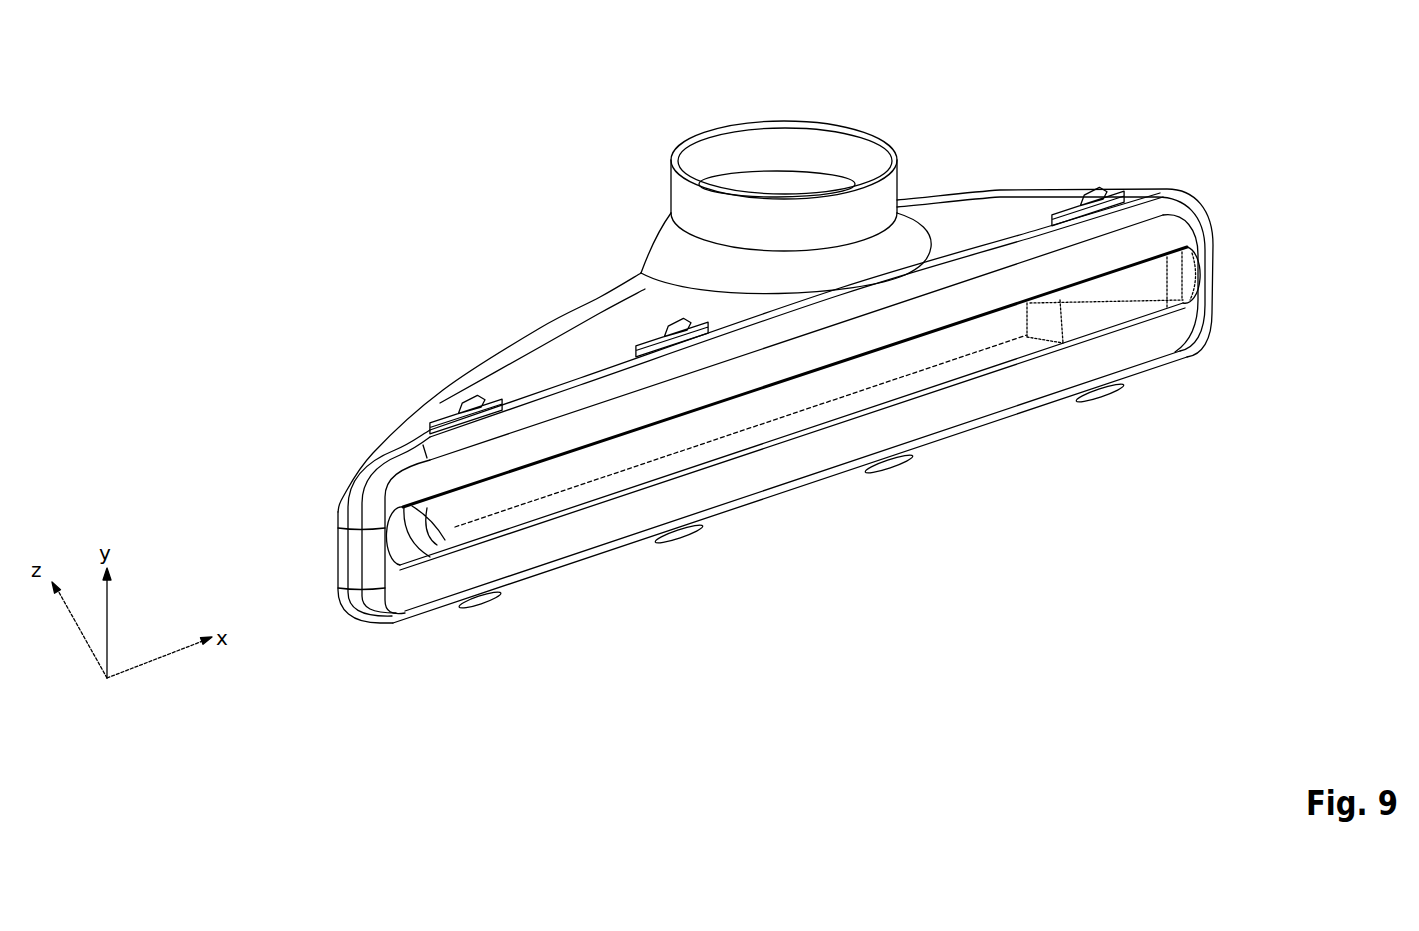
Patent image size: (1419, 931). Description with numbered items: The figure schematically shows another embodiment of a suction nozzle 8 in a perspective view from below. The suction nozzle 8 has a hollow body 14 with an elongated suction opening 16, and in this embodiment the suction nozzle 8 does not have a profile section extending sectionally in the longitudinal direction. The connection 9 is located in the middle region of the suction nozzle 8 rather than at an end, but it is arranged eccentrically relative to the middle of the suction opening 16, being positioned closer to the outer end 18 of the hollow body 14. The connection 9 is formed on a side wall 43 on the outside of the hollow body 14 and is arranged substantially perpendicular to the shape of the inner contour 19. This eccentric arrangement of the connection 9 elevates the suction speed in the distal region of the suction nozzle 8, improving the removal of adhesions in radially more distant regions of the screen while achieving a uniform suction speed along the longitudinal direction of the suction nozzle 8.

The suction nozzle 8 is at (836, 366).
The connection 9 is at (741, 153).
The hollow body 14 is at (467, 377).
The suction opening 16 is at (921, 395).
The outer end 18 is at (1215, 268).
The inner contour 19 is at (458, 545).
The side wall 43 is at (603, 333).